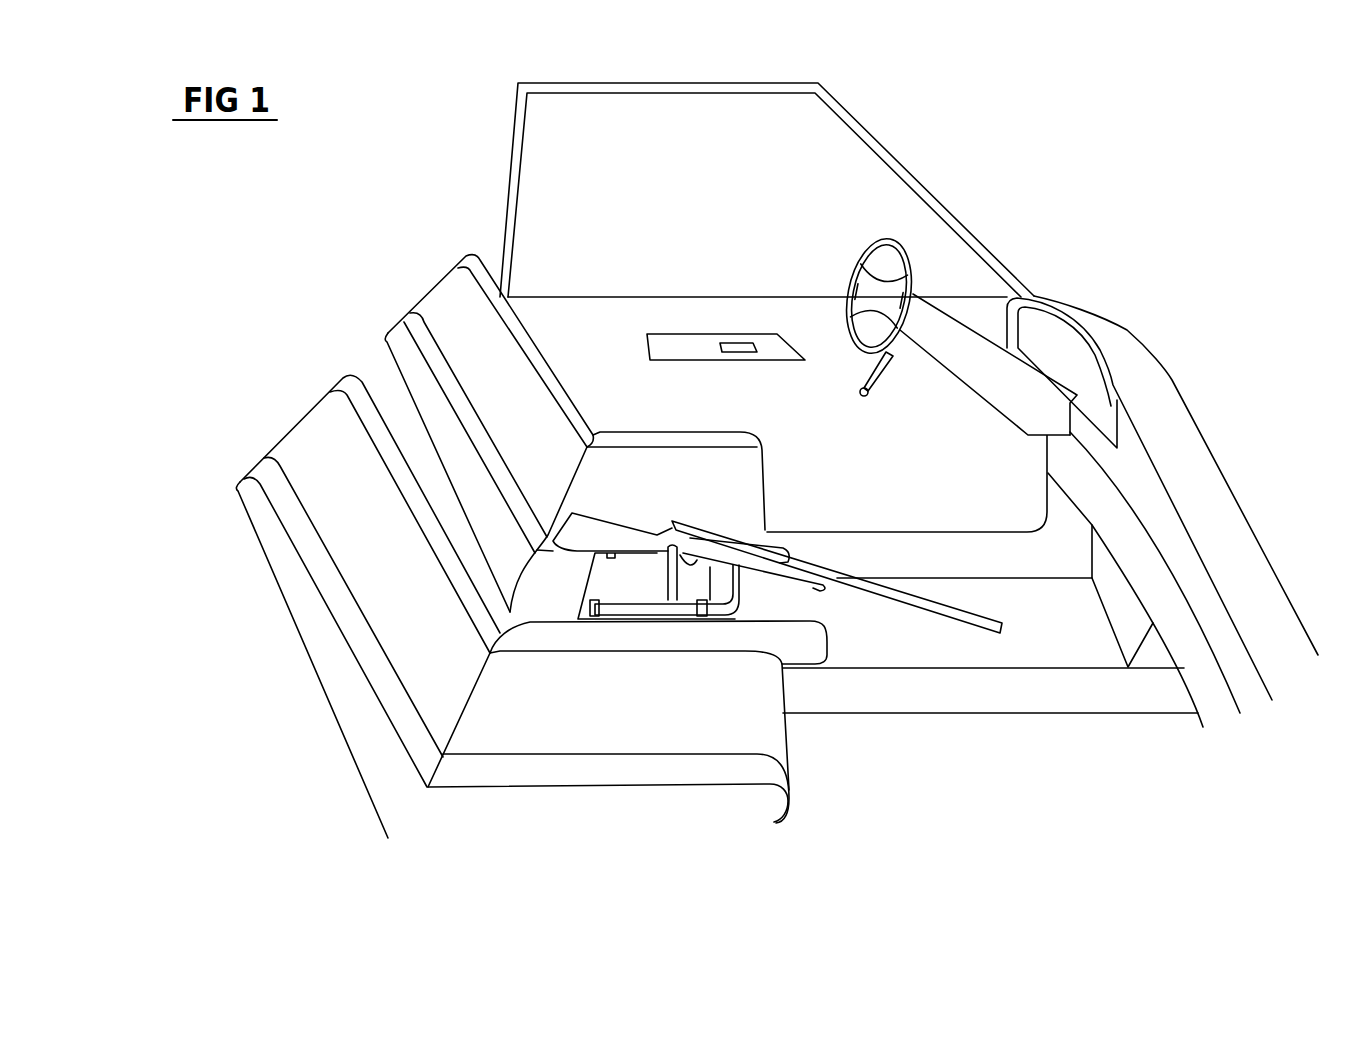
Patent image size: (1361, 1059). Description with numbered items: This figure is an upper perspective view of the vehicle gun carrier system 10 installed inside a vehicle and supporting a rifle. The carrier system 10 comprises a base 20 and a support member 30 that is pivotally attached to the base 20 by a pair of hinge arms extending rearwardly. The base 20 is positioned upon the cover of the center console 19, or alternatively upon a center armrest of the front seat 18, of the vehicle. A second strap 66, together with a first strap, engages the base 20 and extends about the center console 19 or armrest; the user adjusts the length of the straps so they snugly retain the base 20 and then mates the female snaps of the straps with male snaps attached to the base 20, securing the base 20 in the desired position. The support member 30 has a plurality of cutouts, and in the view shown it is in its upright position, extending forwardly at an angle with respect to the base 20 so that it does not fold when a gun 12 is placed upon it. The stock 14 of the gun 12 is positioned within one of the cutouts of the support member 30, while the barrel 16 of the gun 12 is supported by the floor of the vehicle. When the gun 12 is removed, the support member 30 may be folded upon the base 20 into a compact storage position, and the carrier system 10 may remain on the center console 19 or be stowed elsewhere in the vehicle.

The vehicle gun carrier system 10 is at (1059, 168).
The gun 12 is at (820, 580).
The stock 14 is at (655, 540).
The barrel 16 is at (970, 630).
The front seat 18 is at (714, 470).
The center console 19 is at (540, 598).
The base 20 is at (638, 590).
The support member 30 is at (667, 587).
The second strap 66 is at (600, 603).